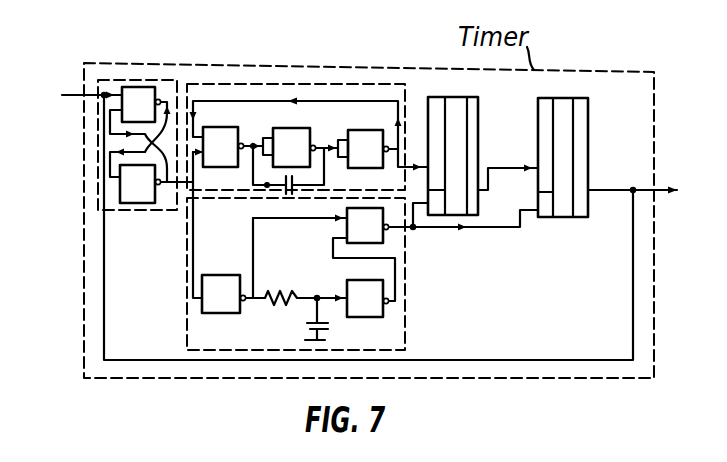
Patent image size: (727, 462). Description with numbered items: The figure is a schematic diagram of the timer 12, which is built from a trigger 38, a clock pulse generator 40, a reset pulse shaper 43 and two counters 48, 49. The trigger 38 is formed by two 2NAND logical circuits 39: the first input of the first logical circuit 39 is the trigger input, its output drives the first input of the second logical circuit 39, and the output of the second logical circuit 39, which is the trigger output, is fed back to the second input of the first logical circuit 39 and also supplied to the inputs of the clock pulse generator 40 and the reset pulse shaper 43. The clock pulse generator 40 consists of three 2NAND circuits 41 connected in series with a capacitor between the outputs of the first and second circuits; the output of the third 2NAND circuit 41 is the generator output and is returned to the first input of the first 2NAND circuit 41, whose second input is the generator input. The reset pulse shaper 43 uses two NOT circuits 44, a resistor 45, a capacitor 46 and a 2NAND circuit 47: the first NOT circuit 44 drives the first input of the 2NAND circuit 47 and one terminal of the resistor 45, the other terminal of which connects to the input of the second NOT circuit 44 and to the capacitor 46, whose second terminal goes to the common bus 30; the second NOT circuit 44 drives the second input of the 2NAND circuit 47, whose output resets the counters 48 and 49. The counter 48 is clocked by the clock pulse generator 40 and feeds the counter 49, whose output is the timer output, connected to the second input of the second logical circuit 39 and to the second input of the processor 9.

The processor 9 is at (371, 209).
The timer 12 is at (299, 66).
The common bus 30 is at (326, 339).
The trigger 38 is at (148, 82).
The logical circuit 39 is at (160, 92).
The clock pulse generator 40 is at (320, 82).
The 2NAND circuit 41 is at (240, 129).
The reset pulse shaper 43 is at (418, 304).
The NOT circuit 44 is at (213, 287).
The resistor 45 is at (287, 295).
The capacitor 46 is at (306, 325).
The 2NAND circuit 47 is at (386, 238).
The counter 48 is at (465, 97).
The counter 49 is at (572, 98).